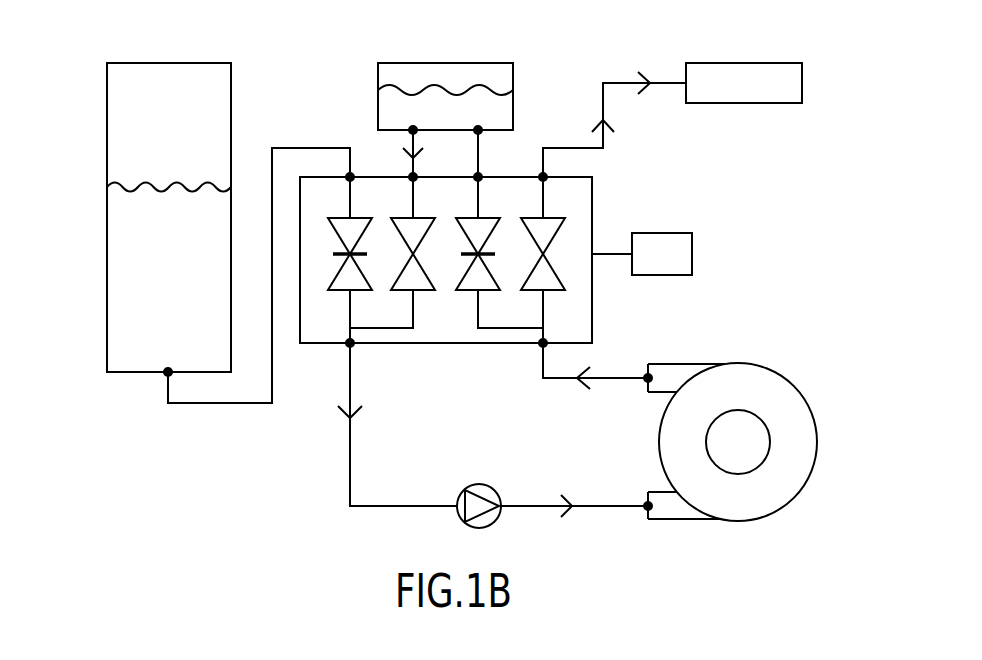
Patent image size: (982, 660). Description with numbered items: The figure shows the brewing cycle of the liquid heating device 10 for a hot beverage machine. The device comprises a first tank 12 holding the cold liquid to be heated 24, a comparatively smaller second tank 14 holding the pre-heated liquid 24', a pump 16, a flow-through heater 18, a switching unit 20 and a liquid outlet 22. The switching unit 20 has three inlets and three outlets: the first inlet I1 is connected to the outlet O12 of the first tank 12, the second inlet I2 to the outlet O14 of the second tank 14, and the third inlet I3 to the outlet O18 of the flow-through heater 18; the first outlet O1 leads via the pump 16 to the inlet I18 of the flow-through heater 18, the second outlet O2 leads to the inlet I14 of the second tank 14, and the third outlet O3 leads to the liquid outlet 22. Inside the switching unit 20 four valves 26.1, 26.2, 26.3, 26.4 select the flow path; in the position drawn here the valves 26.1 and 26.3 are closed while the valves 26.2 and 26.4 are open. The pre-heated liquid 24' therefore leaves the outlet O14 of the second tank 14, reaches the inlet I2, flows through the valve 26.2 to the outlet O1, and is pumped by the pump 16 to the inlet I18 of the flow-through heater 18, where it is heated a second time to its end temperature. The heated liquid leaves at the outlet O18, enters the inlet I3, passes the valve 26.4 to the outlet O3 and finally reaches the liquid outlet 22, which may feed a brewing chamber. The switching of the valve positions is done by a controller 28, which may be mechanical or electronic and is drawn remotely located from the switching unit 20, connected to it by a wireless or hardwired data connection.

The liquid heating device 10 is at (128, 45).
The first tank 12 is at (107, 285).
The liquid to be heated 24 is at (146, 215).
The pre-heated liquid 24' is at (416, 101).
The second tank 14 is at (513, 103).
The pump 16 is at (483, 523).
The flow-through heater 18 is at (778, 389).
The switching unit 20 is at (593, 305).
The liquid outlet 22 is at (727, 77).
The valve 26.1 is at (345, 214).
The valve 26.2 is at (420, 293).
The valve 26.3 is at (482, 217).
The valve 26.4 is at (548, 293).
The controller 28 is at (693, 250).
The outlet of the first tank O12 is at (240, 277).
The outlet of the second tank O14 is at (395, 151).
The inlet of the second tank I14 is at (497, 151).
The first inlet I1 is at (361, 167).
The second inlet I2 is at (425, 167).
The second outlet O2 is at (492, 167).
The third outlet O3 is at (612, 126).
The first outlet O1 is at (397, 422).
The third inlet I3 is at (593, 364).
The outlet of the flow-through heater O18 is at (674, 393).
The inlet of the flow-through heater I18 is at (677, 520).